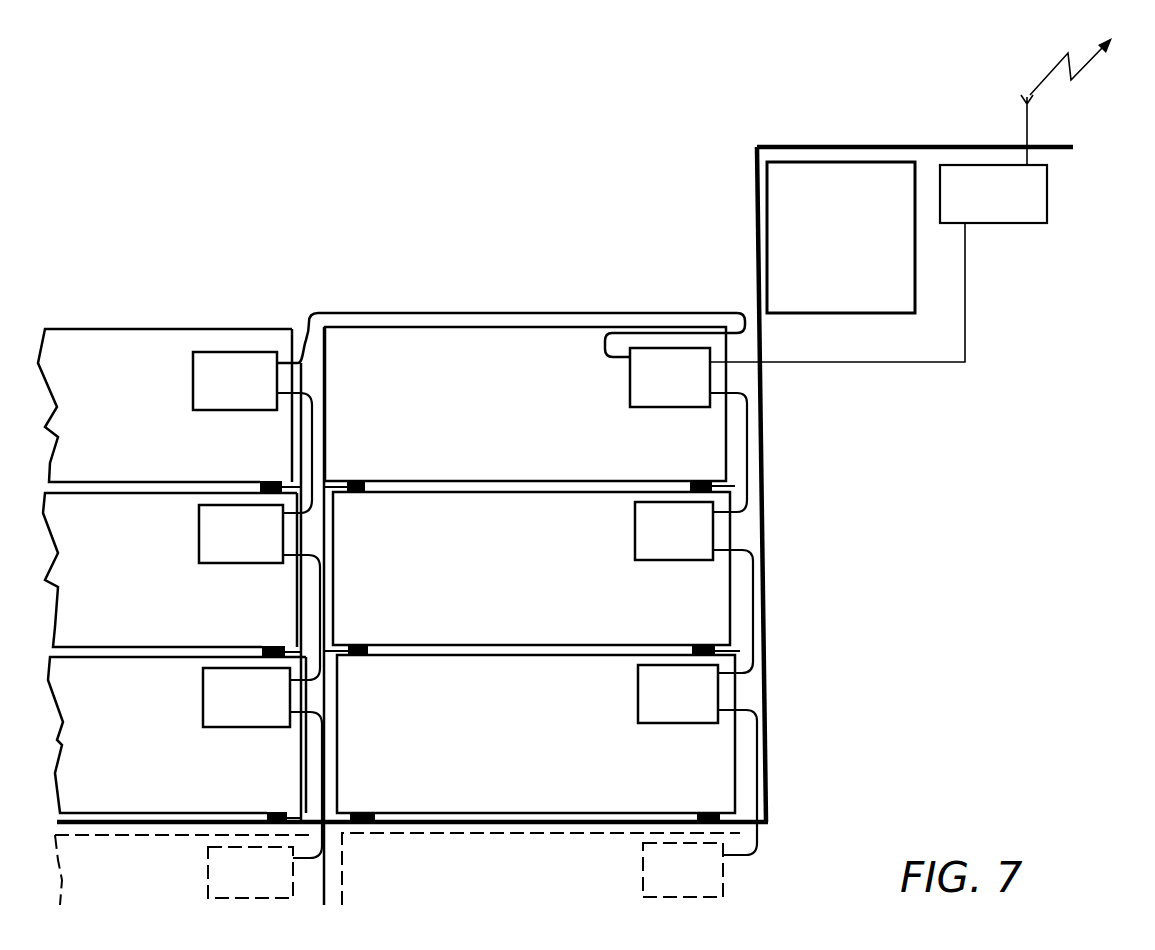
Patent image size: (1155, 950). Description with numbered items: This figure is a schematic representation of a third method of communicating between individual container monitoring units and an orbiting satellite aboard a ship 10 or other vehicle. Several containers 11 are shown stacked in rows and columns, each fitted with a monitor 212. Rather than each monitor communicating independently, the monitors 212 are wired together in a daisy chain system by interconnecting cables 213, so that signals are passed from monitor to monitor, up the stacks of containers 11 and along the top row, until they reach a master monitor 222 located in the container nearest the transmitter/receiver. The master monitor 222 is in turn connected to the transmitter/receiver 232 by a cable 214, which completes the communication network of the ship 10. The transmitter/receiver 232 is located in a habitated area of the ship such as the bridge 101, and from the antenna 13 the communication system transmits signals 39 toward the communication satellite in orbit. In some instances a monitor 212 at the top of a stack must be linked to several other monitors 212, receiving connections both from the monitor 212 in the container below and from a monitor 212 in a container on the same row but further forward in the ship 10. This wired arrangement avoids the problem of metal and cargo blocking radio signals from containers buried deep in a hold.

The ship 10 is at (262, 152).
The container 11 is at (165, 329).
The antenna 13 is at (1016, 130).
The signals 39 is at (1075, 66).
The bridge 101 is at (770, 147).
The monitor 212 is at (224, 352).
The interconnecting cable 213 is at (573, 313).
The cable 214 is at (903, 365).
The master monitor 222 is at (630, 374).
The transmitter/receiver 232 is at (1047, 202).